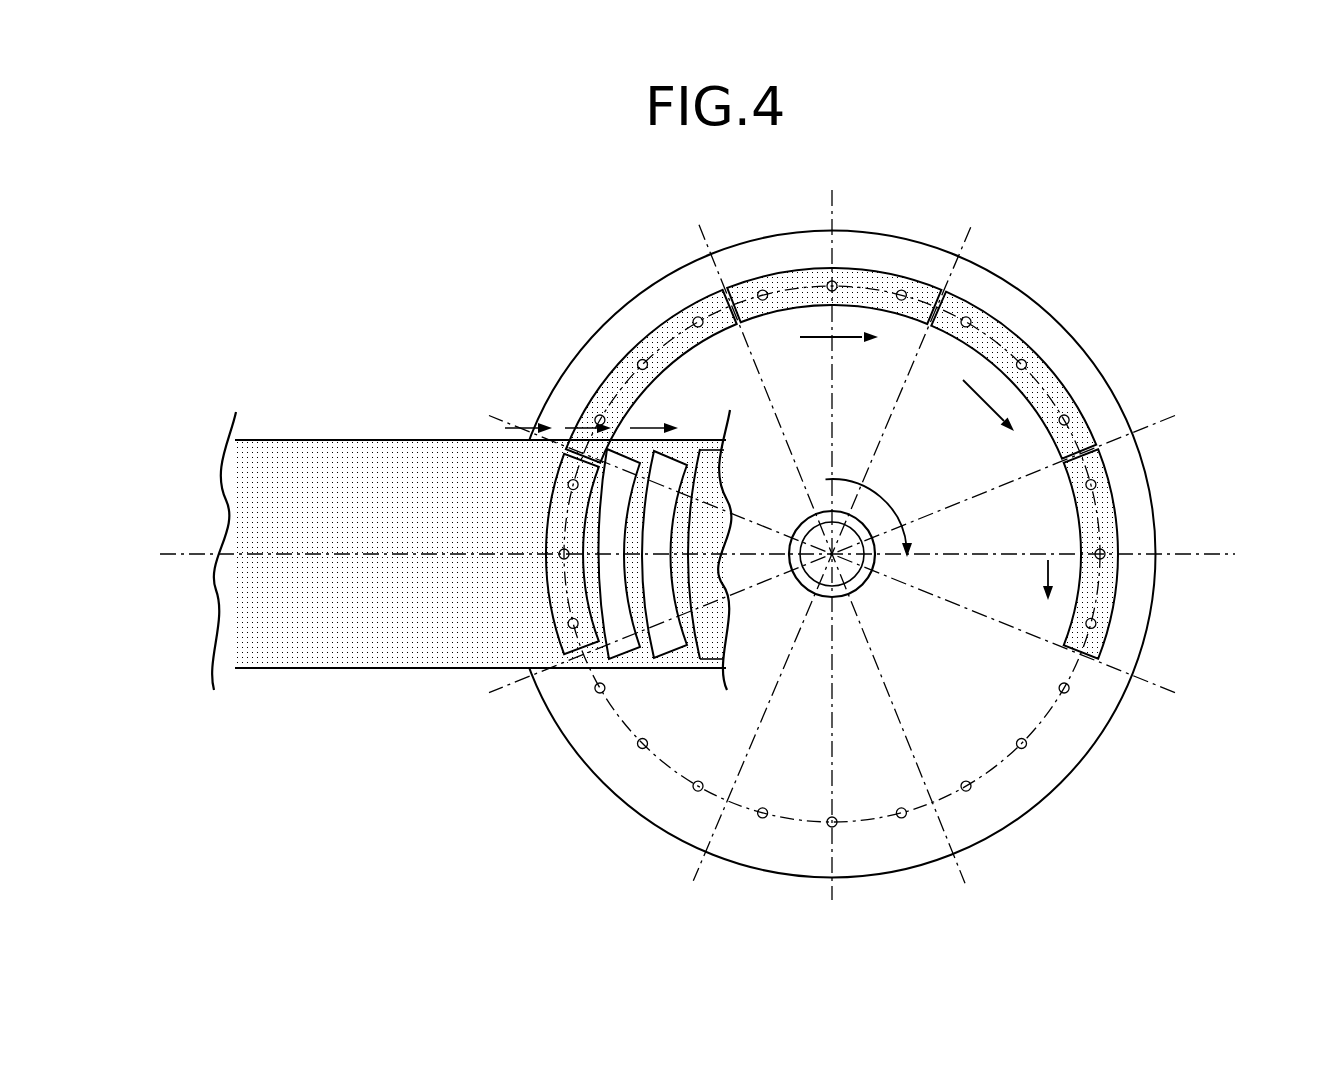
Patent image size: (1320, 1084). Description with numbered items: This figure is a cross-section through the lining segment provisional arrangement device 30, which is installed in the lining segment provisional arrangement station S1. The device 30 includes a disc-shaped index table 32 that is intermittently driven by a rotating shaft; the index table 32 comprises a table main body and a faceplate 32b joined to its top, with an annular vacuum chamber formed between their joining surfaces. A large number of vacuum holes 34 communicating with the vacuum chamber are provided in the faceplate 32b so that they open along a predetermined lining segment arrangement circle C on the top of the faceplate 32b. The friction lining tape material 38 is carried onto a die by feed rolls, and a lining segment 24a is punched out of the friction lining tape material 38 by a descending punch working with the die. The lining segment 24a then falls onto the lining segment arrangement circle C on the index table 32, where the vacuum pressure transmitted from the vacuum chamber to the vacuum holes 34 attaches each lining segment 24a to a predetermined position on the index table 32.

The lining segment 24a is at (658, 334).
The lining segment provisional arrangement device 30 is at (1140, 363).
The index table 32 is at (1151, 596).
The faceplate 32b is at (1080, 730).
The vacuum holes 34 is at (898, 278).
The friction lining tape material 38 is at (372, 450).
The lining segment arrangement circle C is at (993, 767).
The lining segment provisional arrangement station S1 is at (1190, 219).